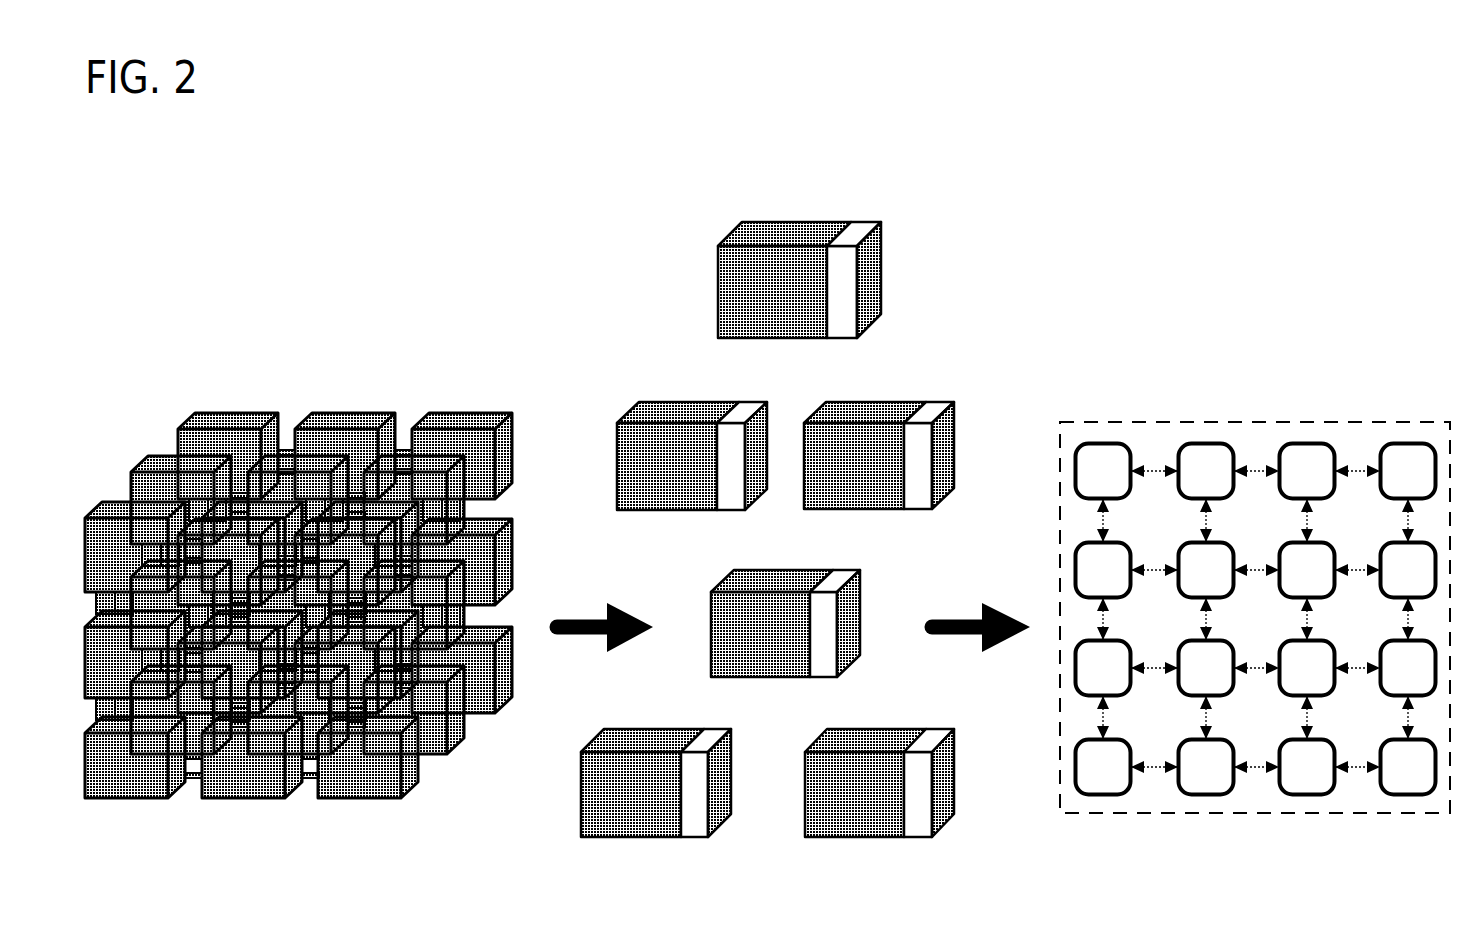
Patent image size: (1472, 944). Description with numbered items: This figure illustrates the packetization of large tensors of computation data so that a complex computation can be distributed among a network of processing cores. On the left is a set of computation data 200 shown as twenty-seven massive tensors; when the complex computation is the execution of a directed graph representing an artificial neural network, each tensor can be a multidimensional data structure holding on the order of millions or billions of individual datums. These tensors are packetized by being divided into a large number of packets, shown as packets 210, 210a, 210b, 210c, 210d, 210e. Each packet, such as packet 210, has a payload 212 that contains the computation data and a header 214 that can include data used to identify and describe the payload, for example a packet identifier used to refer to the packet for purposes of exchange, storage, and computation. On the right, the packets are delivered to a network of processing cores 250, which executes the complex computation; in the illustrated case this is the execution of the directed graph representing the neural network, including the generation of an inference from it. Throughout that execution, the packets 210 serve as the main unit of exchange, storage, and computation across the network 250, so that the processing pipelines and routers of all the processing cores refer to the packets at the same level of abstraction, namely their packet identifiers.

The set of computation data 200 is at (317, 377).
The packet 210 is at (809, 255).
The payload 212 is at (755, 288).
The header 214 is at (850, 285).
The packet 210a is at (728, 389).
The packet 210b is at (922, 389).
The packet 210c is at (820, 561).
The packet 210d is at (703, 719).
The packet 210e is at (927, 719).
The network of processing cores 250 is at (1237, 392).